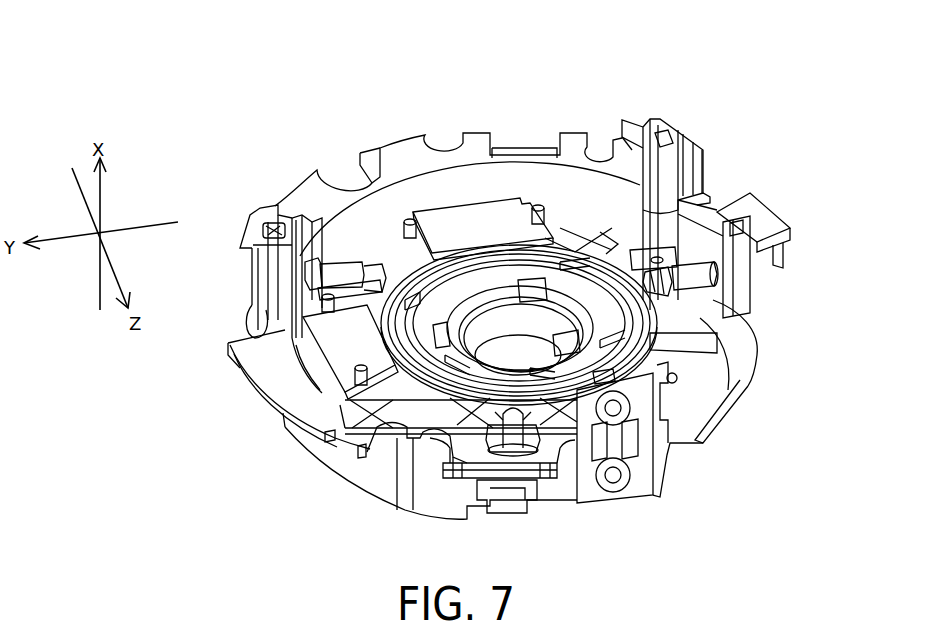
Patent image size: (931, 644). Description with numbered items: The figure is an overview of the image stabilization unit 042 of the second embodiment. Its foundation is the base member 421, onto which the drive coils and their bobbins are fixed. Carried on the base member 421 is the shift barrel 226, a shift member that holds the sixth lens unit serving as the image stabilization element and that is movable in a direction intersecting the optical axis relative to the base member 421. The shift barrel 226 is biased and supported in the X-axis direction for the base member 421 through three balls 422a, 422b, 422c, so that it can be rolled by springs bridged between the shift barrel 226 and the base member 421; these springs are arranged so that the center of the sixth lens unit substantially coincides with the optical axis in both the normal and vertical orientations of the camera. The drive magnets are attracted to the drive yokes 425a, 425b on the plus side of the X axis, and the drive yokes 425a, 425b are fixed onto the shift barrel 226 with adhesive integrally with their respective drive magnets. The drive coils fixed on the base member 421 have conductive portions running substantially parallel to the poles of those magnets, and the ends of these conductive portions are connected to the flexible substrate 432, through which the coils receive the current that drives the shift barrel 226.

The image stabilization unit 042 is at (817, 73).
The base member 421 is at (352, 477).
The shift barrel 226 is at (581, 243).
The drive yoke 425a is at (450, 212).
The drive yoke 425b is at (340, 353).
The ball 422a is at (695, 278).
The ball 422b is at (340, 267).
The ball 422c is at (513, 433).
The flexible substrate 432 is at (673, 410).